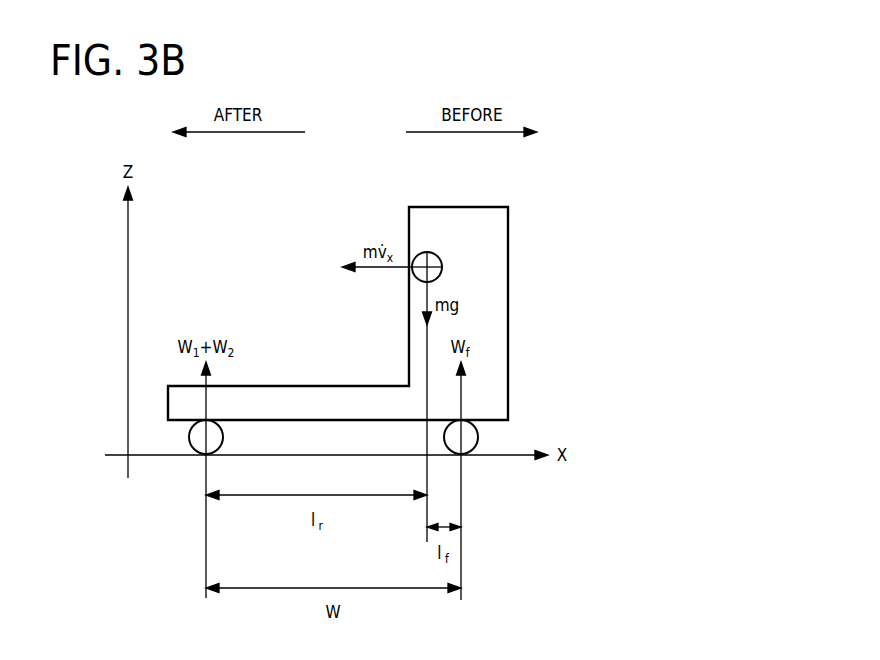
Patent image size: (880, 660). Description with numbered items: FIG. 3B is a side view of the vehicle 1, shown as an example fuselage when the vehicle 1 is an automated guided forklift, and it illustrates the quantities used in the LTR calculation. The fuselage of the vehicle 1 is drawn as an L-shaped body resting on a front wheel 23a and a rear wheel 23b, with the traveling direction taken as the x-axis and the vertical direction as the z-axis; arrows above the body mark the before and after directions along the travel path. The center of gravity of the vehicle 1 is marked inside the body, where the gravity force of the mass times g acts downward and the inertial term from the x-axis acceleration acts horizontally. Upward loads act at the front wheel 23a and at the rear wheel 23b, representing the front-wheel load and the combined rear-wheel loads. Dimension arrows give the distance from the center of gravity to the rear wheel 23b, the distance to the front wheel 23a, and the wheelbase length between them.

The vehicle 1 is at (472, 207).
The front wheel 23a is at (478, 437).
The rear wheel 23b is at (189, 437).